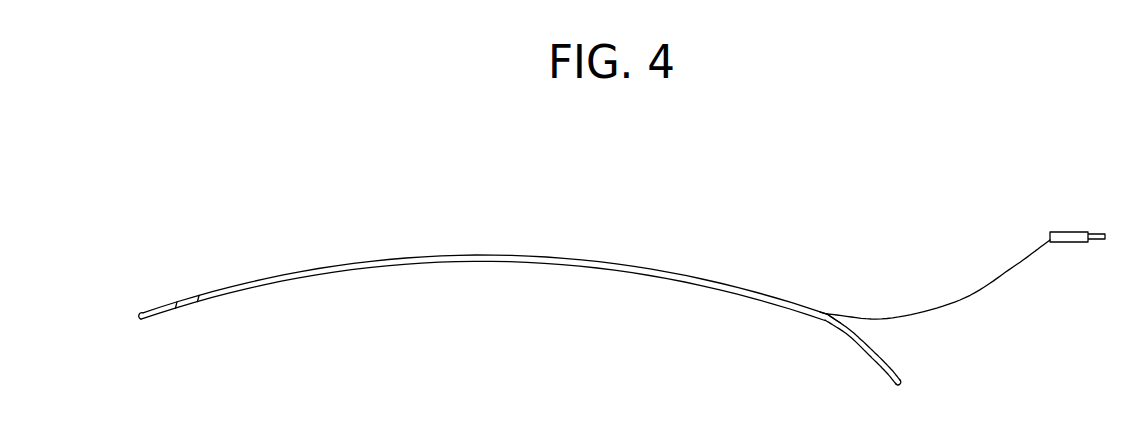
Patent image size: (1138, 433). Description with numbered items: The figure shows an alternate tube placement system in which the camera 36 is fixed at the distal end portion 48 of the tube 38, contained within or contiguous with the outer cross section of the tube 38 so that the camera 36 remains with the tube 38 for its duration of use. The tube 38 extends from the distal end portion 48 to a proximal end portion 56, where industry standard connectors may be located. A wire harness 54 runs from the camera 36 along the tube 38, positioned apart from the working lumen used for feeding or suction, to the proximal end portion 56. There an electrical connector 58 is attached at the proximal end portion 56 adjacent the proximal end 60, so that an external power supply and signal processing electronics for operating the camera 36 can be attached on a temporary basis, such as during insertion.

The camera 36 is at (153, 310).
The tube 38 is at (480, 262).
The distal end portion 48 is at (235, 298).
The wire harness 54 is at (962, 301).
The proximal end portion 56 is at (830, 320).
The electrical connector 58 is at (1072, 242).
The proximal end 60 is at (903, 384).